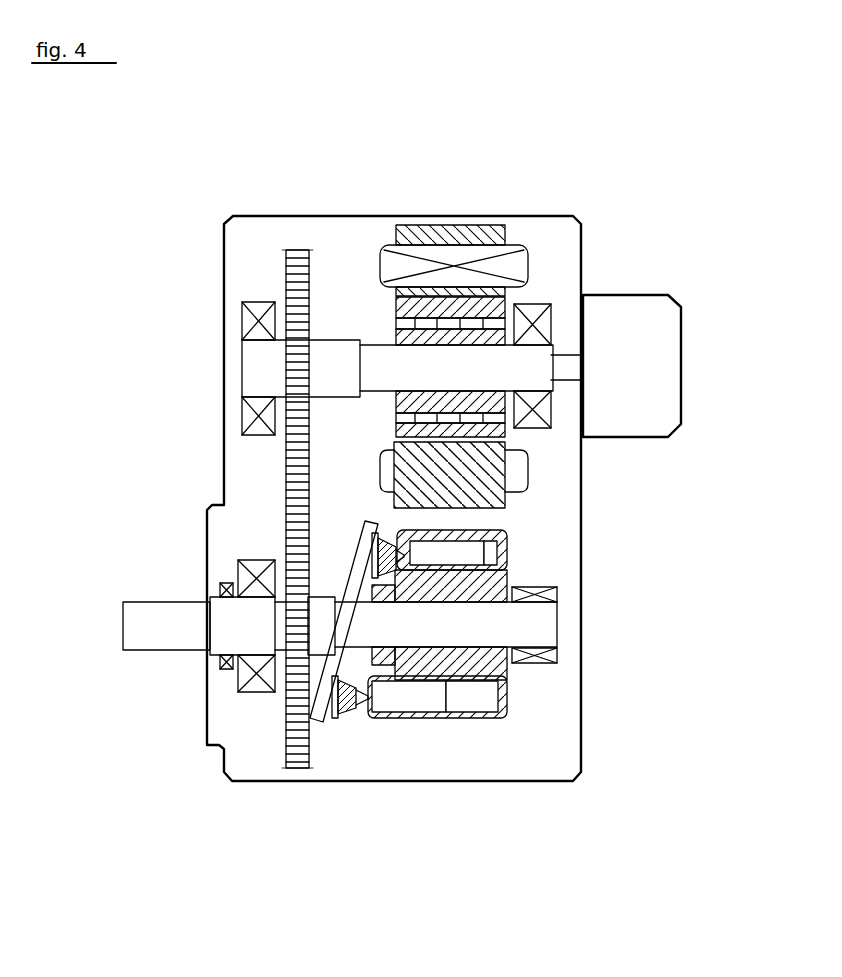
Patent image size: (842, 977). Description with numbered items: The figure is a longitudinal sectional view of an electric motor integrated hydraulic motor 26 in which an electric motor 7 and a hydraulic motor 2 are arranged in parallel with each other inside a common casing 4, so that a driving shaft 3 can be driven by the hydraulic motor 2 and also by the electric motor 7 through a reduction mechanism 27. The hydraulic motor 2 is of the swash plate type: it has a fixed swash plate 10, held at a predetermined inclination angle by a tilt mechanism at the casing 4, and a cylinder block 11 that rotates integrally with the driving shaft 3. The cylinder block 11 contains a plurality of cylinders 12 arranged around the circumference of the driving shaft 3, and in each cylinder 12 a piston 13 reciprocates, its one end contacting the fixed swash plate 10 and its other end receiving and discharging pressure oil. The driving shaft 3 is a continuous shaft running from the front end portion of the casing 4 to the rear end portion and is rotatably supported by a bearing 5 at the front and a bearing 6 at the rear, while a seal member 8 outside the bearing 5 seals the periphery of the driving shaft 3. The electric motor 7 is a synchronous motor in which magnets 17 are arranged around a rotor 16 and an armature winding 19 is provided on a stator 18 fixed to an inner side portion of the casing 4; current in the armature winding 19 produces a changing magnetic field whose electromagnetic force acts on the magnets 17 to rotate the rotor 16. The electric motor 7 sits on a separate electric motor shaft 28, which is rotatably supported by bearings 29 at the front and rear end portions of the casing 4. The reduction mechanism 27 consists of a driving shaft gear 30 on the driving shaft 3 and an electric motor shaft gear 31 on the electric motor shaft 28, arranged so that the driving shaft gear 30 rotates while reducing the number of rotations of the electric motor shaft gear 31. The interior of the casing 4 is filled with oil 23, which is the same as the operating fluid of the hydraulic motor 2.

The hydraulic motor 2 is at (365, 727).
The driving shaft 3 is at (145, 640).
The casing 4 is at (222, 265).
The bearing 5 is at (255, 685).
The bearing 6 is at (557, 588).
The electric motor 7 is at (541, 272).
The seal member 8 is at (213, 665).
The fixed swash plate 10 is at (325, 724).
The cylinder block 11 is at (487, 665).
The cylinder 12 is at (470, 705).
The piston 13 is at (416, 695).
The rotor 16 is at (509, 436).
The magnet 17 is at (473, 420).
The stator 18 is at (415, 232).
The armature winding 19 is at (515, 262).
The oil 23 is at (337, 284).
The electric motor integrated hydraulic motor 26 is at (726, 78).
The reduction mechanism 27 is at (268, 521).
The electric motor shaft 28 is at (250, 382).
The bearing 29 is at (245, 325).
The driving shaft gear 30 is at (287, 727).
The electric motor shaft gear 31 is at (299, 252).